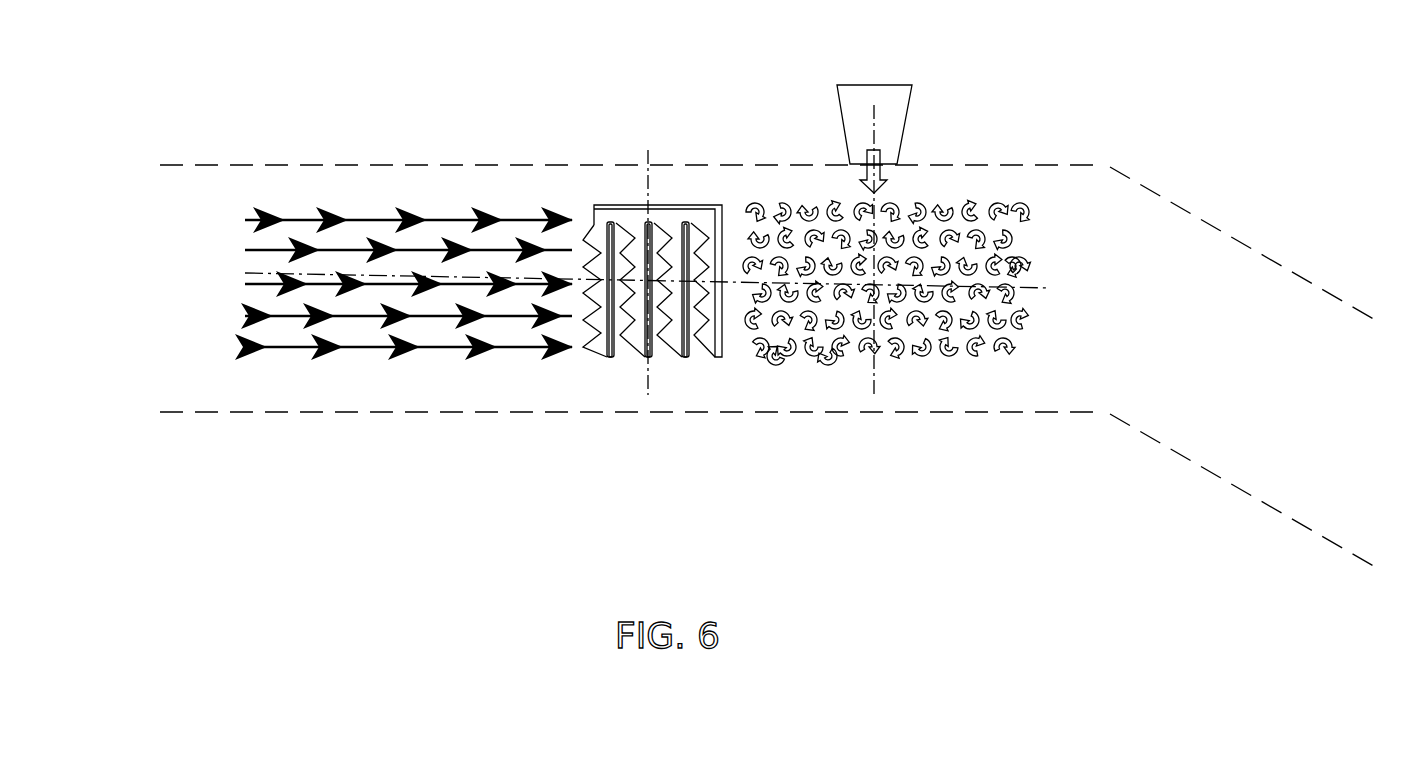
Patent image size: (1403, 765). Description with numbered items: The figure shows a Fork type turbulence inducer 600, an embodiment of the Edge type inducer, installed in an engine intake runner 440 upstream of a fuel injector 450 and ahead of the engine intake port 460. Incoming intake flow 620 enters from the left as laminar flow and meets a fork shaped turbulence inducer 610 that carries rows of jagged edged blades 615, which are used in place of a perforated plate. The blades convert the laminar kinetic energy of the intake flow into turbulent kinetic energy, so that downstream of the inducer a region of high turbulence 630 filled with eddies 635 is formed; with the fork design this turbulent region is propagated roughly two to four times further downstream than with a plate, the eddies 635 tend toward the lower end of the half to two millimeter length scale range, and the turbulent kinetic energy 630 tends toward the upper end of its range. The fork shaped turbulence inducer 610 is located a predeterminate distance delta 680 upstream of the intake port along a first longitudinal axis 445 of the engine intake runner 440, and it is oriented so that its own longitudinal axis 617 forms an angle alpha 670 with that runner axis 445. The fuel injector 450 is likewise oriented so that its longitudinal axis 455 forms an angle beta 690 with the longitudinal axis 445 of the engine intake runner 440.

The turbulence inducer 600 is at (425, 85).
The engine intake runner 440 is at (168, 294).
The engine intake port 460 is at (1231, 358).
The incoming intake flow 620 is at (357, 333).
The fork shaped turbulence inducer 610 is at (665, 187).
The jagged edged blades 615 is at (633, 347).
The longitudinal axis of the fork shaped turbulence inducer 617 is at (645, 158).
The angle alpha 670 is at (667, 313).
The predeterminate distance delta 680 is at (732, 247).
The fuel injector 450 is at (888, 75).
The longitudinal axis of the fuel injector 455 is at (873, 402).
The first longitudinal axis of the engine intake runner 445 is at (1042, 263).
The region of high turbulence 630 is at (920, 390).
The eddies 635 is at (827, 358).
The angle beta 690 is at (892, 315).